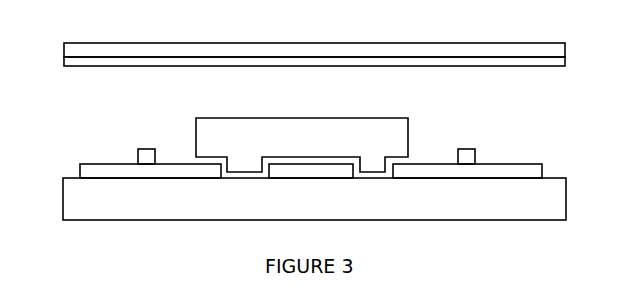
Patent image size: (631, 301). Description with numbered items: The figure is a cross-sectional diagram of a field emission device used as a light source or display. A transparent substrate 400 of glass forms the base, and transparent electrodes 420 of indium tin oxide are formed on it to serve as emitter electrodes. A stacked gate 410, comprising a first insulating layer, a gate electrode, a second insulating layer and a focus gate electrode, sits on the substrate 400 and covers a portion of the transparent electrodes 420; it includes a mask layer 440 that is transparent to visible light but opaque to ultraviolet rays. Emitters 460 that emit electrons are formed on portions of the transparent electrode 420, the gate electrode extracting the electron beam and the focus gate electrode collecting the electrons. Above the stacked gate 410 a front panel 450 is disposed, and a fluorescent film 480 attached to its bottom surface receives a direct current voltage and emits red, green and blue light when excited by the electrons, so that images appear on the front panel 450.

The transparent substrate 400 is at (314, 199).
The stacked gate 410 is at (302, 145).
The transparent electrodes 420 is at (532, 172).
The mask layer 440 is at (396, 157).
The front panel 450 is at (540, 49).
The emitters 460 is at (147, 157).
The fluorescent film 480 is at (540, 58).